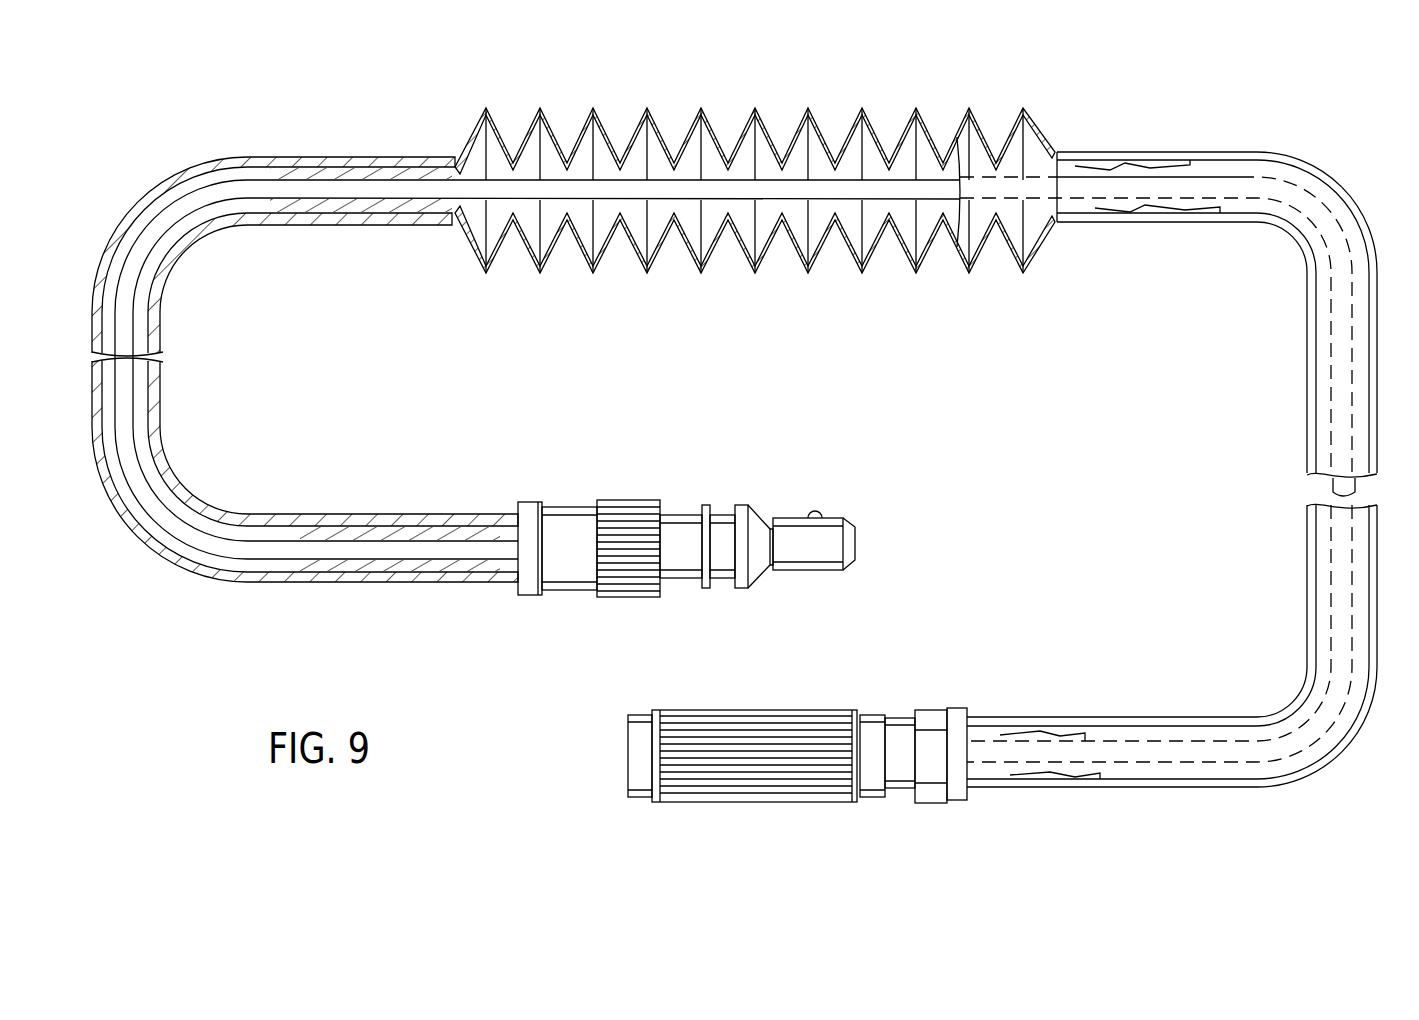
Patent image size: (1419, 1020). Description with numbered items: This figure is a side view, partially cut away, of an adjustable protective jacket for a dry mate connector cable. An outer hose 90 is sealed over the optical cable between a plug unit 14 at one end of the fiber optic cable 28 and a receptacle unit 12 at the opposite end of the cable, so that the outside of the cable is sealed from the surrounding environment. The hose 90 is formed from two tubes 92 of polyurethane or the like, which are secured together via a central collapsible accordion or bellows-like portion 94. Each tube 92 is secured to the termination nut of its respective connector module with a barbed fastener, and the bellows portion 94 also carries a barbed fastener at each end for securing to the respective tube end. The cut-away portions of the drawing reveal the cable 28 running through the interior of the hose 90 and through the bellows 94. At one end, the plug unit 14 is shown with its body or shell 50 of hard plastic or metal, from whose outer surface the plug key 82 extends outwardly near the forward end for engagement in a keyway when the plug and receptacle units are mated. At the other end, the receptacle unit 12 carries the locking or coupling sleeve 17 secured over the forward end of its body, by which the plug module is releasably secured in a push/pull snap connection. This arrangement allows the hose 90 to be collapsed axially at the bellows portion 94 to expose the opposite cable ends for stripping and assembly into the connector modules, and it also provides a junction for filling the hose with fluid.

The outer hose 90 is at (1133, 136).
The tube 92 is at (168, 283).
The bellows portion 94 is at (817, 237).
The fiber optic cable 28 is at (271, 543).
The plug module 14 is at (700, 513).
The plug body 50 is at (680, 520).
The plug key 82 is at (819, 513).
The receptacle module 12 is at (803, 727).
The coupling sleeve 17 is at (730, 725).